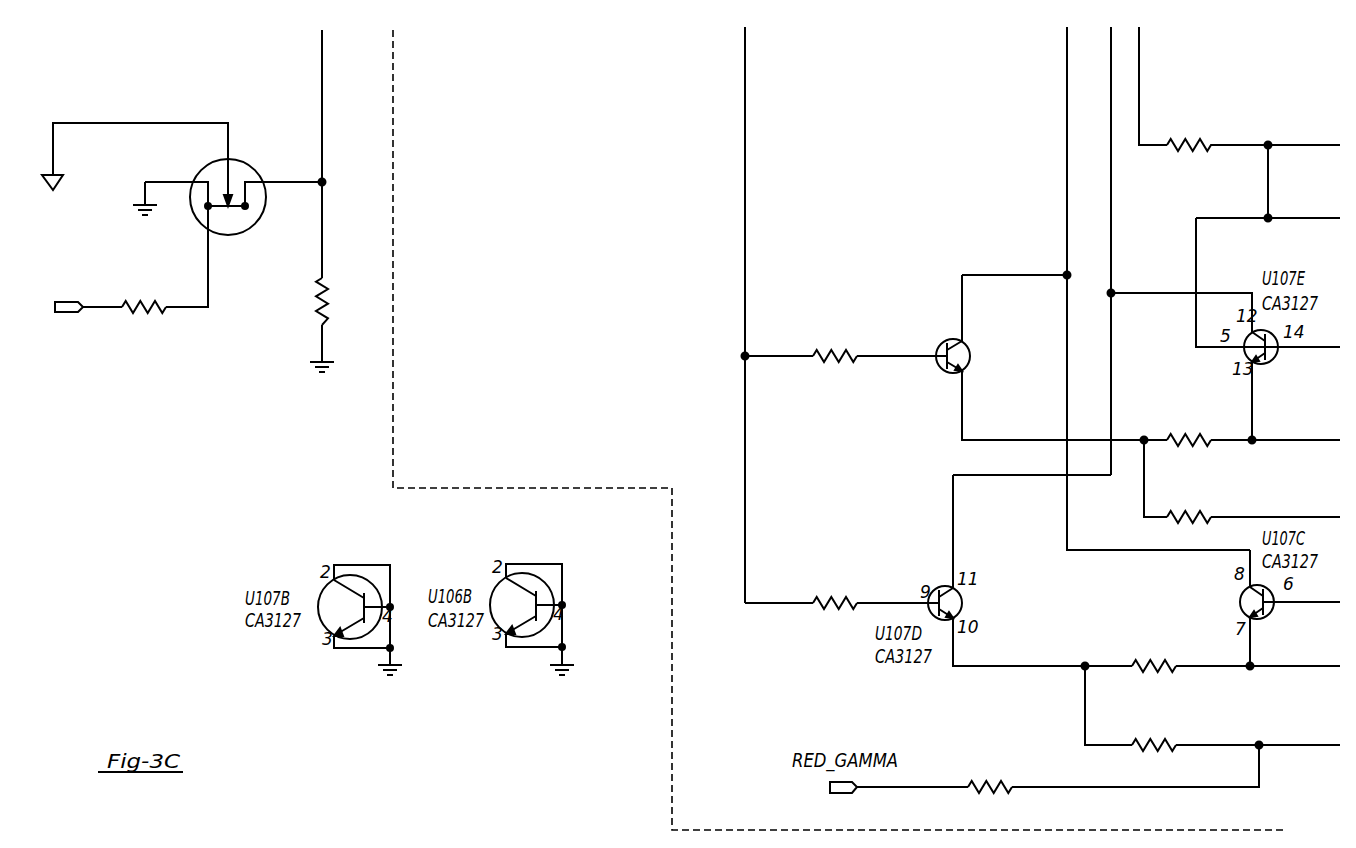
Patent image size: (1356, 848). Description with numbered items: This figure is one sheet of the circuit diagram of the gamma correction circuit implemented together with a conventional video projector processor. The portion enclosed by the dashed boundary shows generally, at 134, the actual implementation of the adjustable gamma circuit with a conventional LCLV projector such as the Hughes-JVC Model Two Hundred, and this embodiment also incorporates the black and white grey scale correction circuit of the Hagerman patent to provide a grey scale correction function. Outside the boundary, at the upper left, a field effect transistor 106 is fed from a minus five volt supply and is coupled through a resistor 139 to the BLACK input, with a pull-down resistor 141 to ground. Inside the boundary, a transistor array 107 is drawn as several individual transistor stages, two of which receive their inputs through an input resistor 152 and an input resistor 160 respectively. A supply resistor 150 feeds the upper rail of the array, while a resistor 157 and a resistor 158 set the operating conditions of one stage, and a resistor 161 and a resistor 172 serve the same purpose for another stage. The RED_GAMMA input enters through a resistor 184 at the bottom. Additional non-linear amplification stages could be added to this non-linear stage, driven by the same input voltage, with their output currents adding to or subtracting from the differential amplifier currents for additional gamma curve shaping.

The adjustable gamma circuit implementation 134 is at (393, 430).
The transistor Q106 106 is at (170, 215).
The resistor R139 139 is at (99, 304).
The resistor R141 141 is at (339, 201).
The resistor R152 152 is at (846, 354).
The resistor R160 160 is at (842, 602).
The transistor array U107 107 is at (1013, 357).
The resistor R150 150 is at (1250, 154).
The resistor R157 157 is at (1242, 438).
The resistor R158 158 is at (1242, 493).
The resistor R161 161 is at (1236, 665).
The resistor R172 172 is at (1212, 719).
The resistor R184 184 is at (1058, 778).